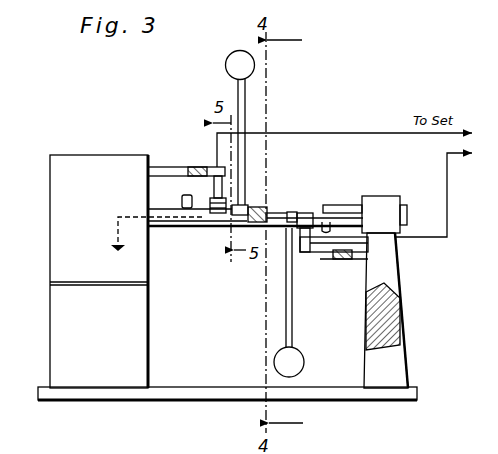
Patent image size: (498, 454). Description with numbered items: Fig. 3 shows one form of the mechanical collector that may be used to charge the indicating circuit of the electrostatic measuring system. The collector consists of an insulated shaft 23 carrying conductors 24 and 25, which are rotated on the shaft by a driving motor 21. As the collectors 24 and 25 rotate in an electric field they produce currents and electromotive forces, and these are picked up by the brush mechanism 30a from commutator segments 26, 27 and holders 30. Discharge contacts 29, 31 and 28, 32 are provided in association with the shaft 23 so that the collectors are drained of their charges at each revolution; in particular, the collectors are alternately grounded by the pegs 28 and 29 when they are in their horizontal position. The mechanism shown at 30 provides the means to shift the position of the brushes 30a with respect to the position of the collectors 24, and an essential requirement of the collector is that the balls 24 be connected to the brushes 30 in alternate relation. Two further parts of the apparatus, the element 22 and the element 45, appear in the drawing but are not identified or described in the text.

The driving motor 21 is at (63, 193).
The support column 22 is at (62, 310).
The insulated shaft 23 is at (271, 212).
The conductor 24 is at (235, 66).
The conductor 25 is at (246, 108).
The commutator segment 26 is at (222, 216).
The commutator segment 27 is at (309, 213).
The discharge contact 28 is at (330, 240).
The discharge contact 29 is at (186, 195).
The holder 30 is at (160, 172).
The brush mechanism 30a is at (223, 192).
The discharge contact 31 is at (175, 230).
The discharge contact 32 is at (349, 206).
The base 45 is at (191, 393).